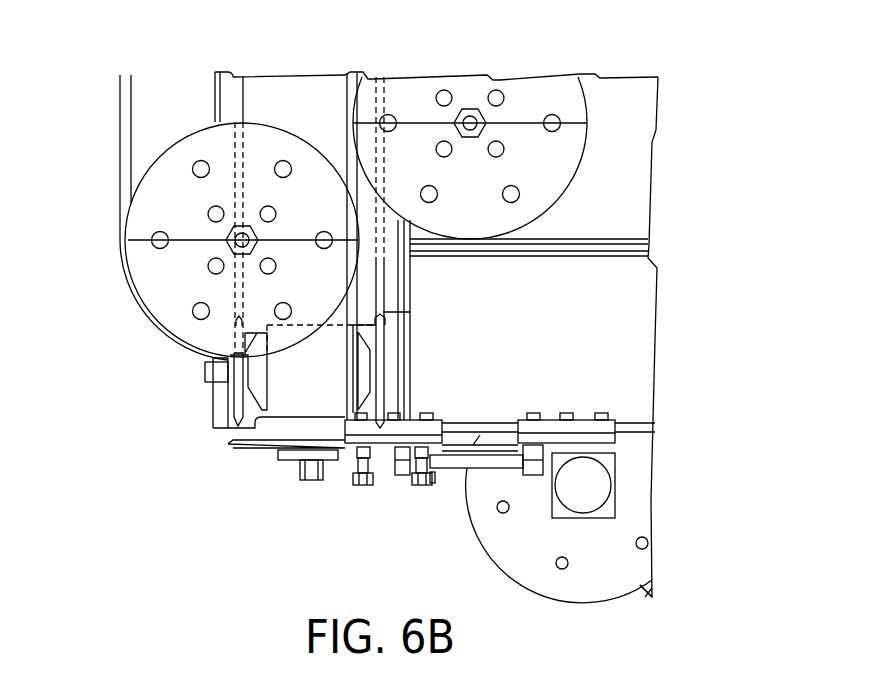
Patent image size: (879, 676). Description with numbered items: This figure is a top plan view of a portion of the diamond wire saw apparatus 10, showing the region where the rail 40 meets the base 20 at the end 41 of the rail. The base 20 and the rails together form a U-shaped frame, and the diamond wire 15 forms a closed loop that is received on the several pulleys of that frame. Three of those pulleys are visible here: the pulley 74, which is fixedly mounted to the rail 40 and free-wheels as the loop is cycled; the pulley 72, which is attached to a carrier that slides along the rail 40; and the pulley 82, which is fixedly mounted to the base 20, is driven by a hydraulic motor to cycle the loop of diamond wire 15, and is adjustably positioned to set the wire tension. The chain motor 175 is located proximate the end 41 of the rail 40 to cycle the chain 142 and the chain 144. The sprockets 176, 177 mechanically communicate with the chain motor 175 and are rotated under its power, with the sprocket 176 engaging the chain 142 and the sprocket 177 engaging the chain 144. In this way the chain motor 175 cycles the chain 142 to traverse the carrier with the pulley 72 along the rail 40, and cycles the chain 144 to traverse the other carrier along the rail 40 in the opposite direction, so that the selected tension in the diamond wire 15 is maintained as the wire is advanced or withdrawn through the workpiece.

The diamond wire saw apparatus 10 is at (698, 167).
The diamond wire 15 is at (120, 130).
The base 20 is at (645, 338).
The rail 40 is at (215, 97).
The end 41 is at (217, 428).
The pulley 72 is at (560, 168).
The pulley 74 is at (150, 272).
The pulley 82 is at (488, 528).
The chain 142 is at (385, 290).
The chain 144 is at (237, 312).
The chain motor 175 is at (300, 385).
The sprocket 176 is at (383, 345).
The sprocket 177 is at (233, 407).